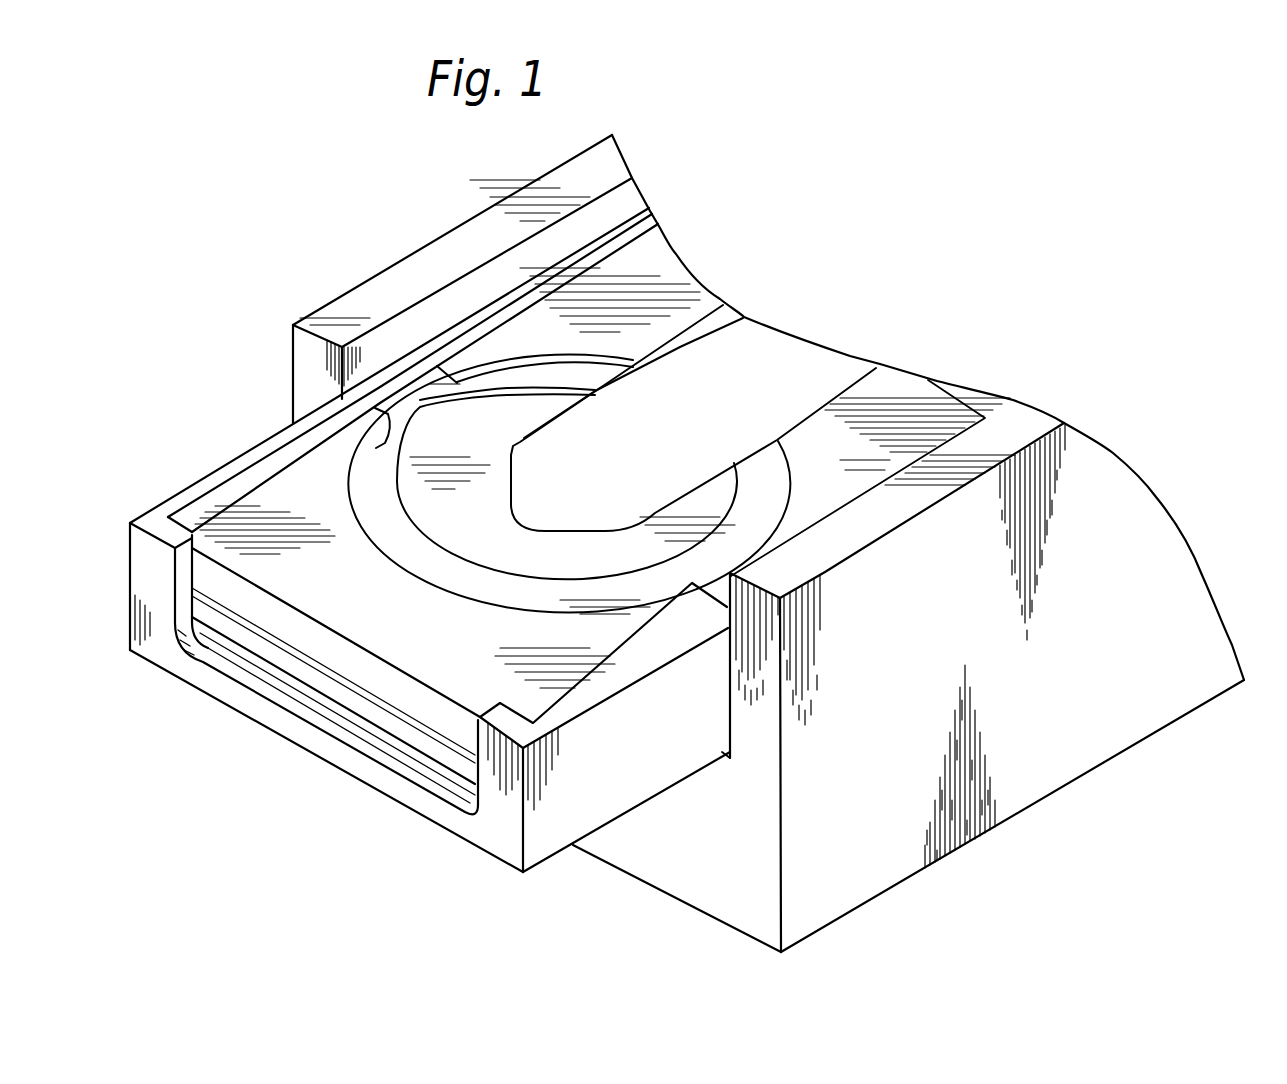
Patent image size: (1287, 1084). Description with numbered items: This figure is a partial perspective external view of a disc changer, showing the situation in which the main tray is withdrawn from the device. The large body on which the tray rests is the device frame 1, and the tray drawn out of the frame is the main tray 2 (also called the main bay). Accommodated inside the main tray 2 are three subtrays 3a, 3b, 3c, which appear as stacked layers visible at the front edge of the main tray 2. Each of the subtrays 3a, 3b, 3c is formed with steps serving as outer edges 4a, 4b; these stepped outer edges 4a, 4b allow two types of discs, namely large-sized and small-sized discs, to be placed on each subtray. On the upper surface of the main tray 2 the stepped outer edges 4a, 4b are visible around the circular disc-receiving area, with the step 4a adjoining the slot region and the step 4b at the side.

The device frame 1 is at (883, 863).
The main tray 2 is at (545, 838).
The subtray 3a is at (278, 622).
The subtray 3b is at (325, 683).
The subtray 3c is at (390, 747).
The outer edge 4a is at (412, 418).
The outer edge 4b is at (380, 425).